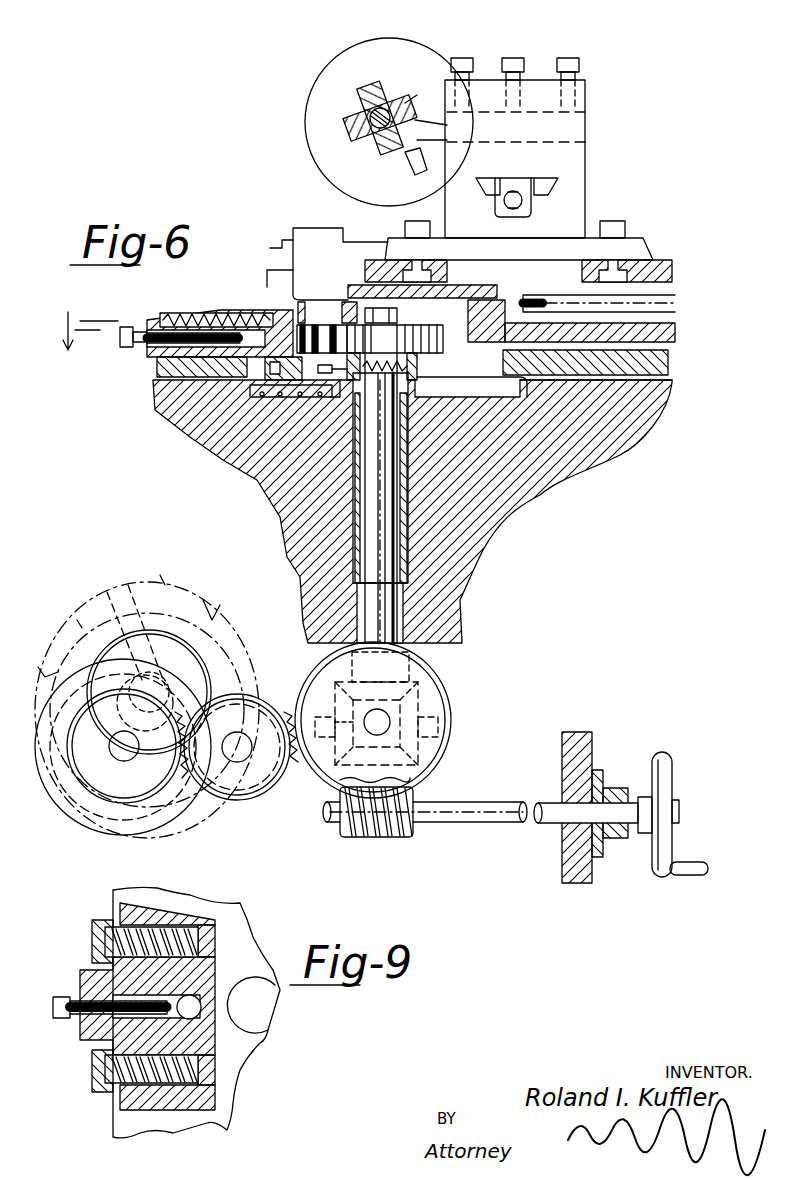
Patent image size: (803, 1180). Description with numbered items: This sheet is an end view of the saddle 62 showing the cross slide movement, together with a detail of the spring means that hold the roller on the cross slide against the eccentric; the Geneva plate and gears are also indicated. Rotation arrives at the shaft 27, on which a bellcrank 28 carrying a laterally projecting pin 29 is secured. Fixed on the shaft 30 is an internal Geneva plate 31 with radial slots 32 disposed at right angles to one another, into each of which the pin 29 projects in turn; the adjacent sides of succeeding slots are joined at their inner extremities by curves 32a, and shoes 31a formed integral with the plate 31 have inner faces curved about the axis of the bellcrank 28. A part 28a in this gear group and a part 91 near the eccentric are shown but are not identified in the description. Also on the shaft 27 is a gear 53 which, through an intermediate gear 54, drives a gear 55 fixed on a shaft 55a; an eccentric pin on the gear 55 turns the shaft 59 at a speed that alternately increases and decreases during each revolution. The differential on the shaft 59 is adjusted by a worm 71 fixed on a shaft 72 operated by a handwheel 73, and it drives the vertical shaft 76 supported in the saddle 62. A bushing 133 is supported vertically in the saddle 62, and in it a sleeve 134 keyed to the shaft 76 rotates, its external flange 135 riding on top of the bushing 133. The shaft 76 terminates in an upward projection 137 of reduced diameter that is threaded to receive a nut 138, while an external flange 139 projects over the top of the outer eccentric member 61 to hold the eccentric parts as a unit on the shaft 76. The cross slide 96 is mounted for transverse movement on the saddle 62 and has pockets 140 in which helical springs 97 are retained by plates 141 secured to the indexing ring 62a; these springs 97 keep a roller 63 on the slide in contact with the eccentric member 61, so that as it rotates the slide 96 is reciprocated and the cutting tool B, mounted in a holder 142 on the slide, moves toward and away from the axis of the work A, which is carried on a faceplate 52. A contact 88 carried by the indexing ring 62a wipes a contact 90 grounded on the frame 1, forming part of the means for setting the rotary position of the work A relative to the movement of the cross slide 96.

In FIG. 6, the frame 1 is at (558, 863).
In FIG. 6, the shaft 27 is at (117, 757).
In FIG. 6, the bellcrank 28 is at (100, 750).
In FIG. 6, the gear rim 28a is at (107, 783).
In FIG. 6, the pin 29 is at (130, 694).
In FIG. 6, the shaft 30 is at (147, 680).
In FIG. 6, the internal Geneva plate 31 is at (147, 582).
In FIG. 6, the shoes 31a is at (205, 603).
In FIG. 6, the radial slots 32 is at (122, 611).
In FIG. 6, the curve 32a is at (149, 672).
In FIG. 6, the faceplate 52 is at (420, 52).
In FIG. 6, the work A is at (405, 95).
In FIG. 6, the cutting tool B is at (422, 150).
In FIG. 6, the gear 53 is at (163, 793).
In FIG. 6, the intermediate gear 54 is at (243, 807).
In FIG. 6, the gear 55 is at (313, 773).
In FIG. 6, the shaft 55a is at (348, 722).
In FIG. 6, the shaft 59 is at (390, 720).
In FIG. 6, the outer eccentric member 61 is at (443, 350).
In FIG. 6, the saddle 62 is at (183, 423).
In FIG. 9, the saddle 62 is at (113, 1122).
In FIG. 6, the indexing ring 62a is at (160, 367).
In FIG. 6, the roller 63 is at (326, 328).
In FIG. 9, the roller 63 is at (278, 988).
In FIG. 6, the worm 71 is at (377, 835).
In FIG. 6, the shaft 72 is at (455, 825).
In FIG. 6, the handwheel 73 is at (655, 877).
In FIG. 6, the vertical shaft 76 is at (393, 533).
In FIG. 6, the contact 88 is at (297, 398).
In FIG. 6, the contact 90 is at (335, 367).
In FIG. 6, the spring 91 is at (413, 378).
In FIG. 6, the cross slide 96 is at (128, 348).
In FIG. 9, the cross slide 96 is at (82, 975).
In FIG. 6, the helical springs 97 is at (225, 307).
In FIG. 9, the helical springs 97 is at (200, 917).
In FIG. 6, the bushing 133 is at (405, 440).
In FIG. 6, the sleeve 134 is at (333, 460).
In FIG. 6, the external flange 135 is at (338, 385).
In FIG. 6, the upward projection 137 is at (399, 324).
In FIG. 6, the nut 138 is at (352, 295).
In FIG. 6, the external flange 139 is at (408, 339).
In FIG. 6, the pockets 140 is at (240, 313).
In FIG. 9, the pockets 140 is at (175, 1085).
In FIG. 9, the plates 141 is at (92, 1080).
In FIG. 6, the holder 142 is at (553, 127).